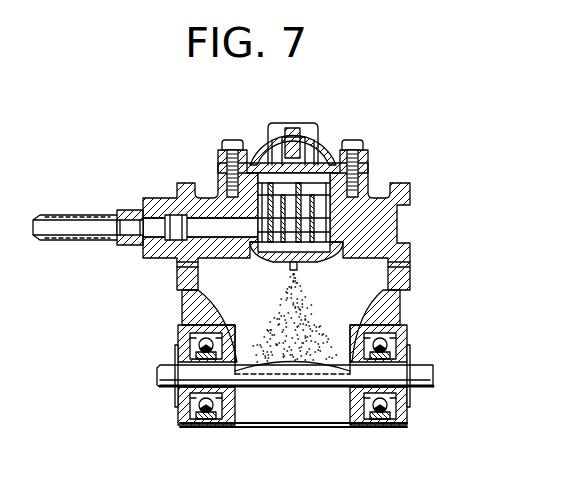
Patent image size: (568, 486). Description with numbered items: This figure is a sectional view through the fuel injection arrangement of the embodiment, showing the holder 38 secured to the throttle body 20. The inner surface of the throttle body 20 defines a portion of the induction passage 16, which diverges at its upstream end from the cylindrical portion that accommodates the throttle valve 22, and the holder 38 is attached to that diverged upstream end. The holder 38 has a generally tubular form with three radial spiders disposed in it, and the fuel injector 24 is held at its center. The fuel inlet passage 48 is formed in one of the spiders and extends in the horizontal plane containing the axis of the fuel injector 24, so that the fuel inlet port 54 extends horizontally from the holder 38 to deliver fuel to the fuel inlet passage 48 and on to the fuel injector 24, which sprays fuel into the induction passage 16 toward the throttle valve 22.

The induction passage 16 is at (340, 407).
The throttle body 20 is at (402, 311).
The throttle valve 22 is at (290, 366).
The fuel injector 24 is at (317, 163).
The holder 38 is at (368, 181).
The fuel inlet passage 48 is at (212, 223).
The fuel inlet port 54 is at (110, 241).